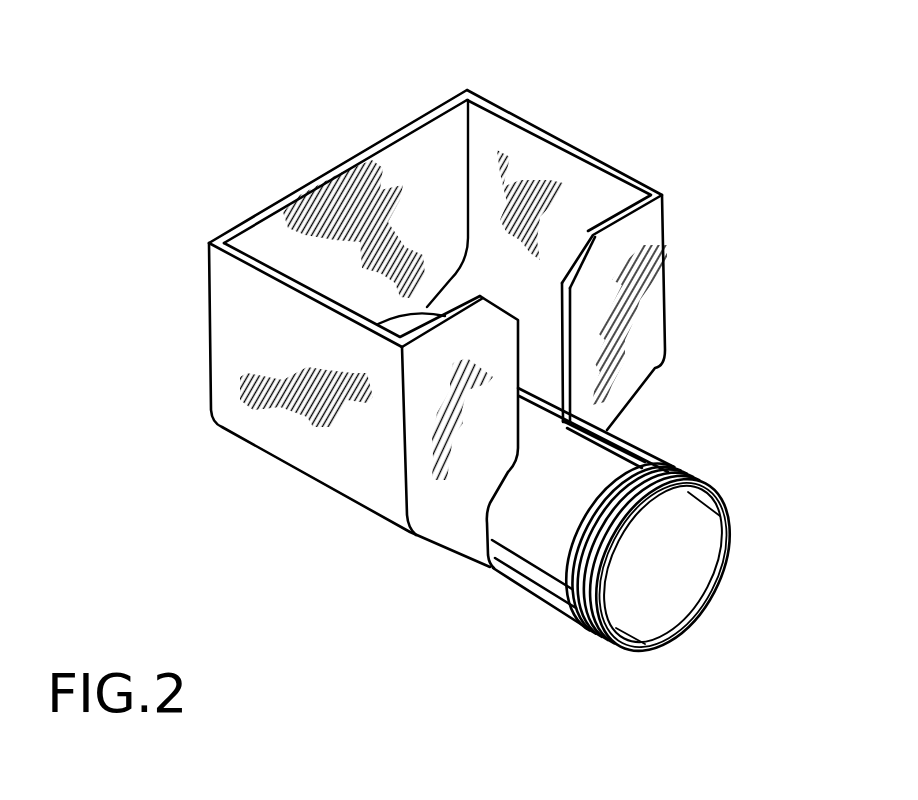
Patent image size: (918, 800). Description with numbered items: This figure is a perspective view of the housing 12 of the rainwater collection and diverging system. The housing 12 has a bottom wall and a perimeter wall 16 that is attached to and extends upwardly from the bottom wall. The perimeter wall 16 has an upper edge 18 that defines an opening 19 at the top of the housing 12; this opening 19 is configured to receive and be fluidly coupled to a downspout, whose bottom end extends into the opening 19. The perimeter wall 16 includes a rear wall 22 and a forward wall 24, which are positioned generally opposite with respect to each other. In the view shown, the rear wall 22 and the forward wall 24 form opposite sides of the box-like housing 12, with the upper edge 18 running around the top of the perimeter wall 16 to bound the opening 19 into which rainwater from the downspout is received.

The housing 12 is at (222, 425).
The perimeter wall 16 is at (208, 266).
The upper edge 18 is at (593, 153).
The opening 19 is at (331, 224).
The rear wall 22 is at (400, 162).
The forward wall 24 is at (643, 335).